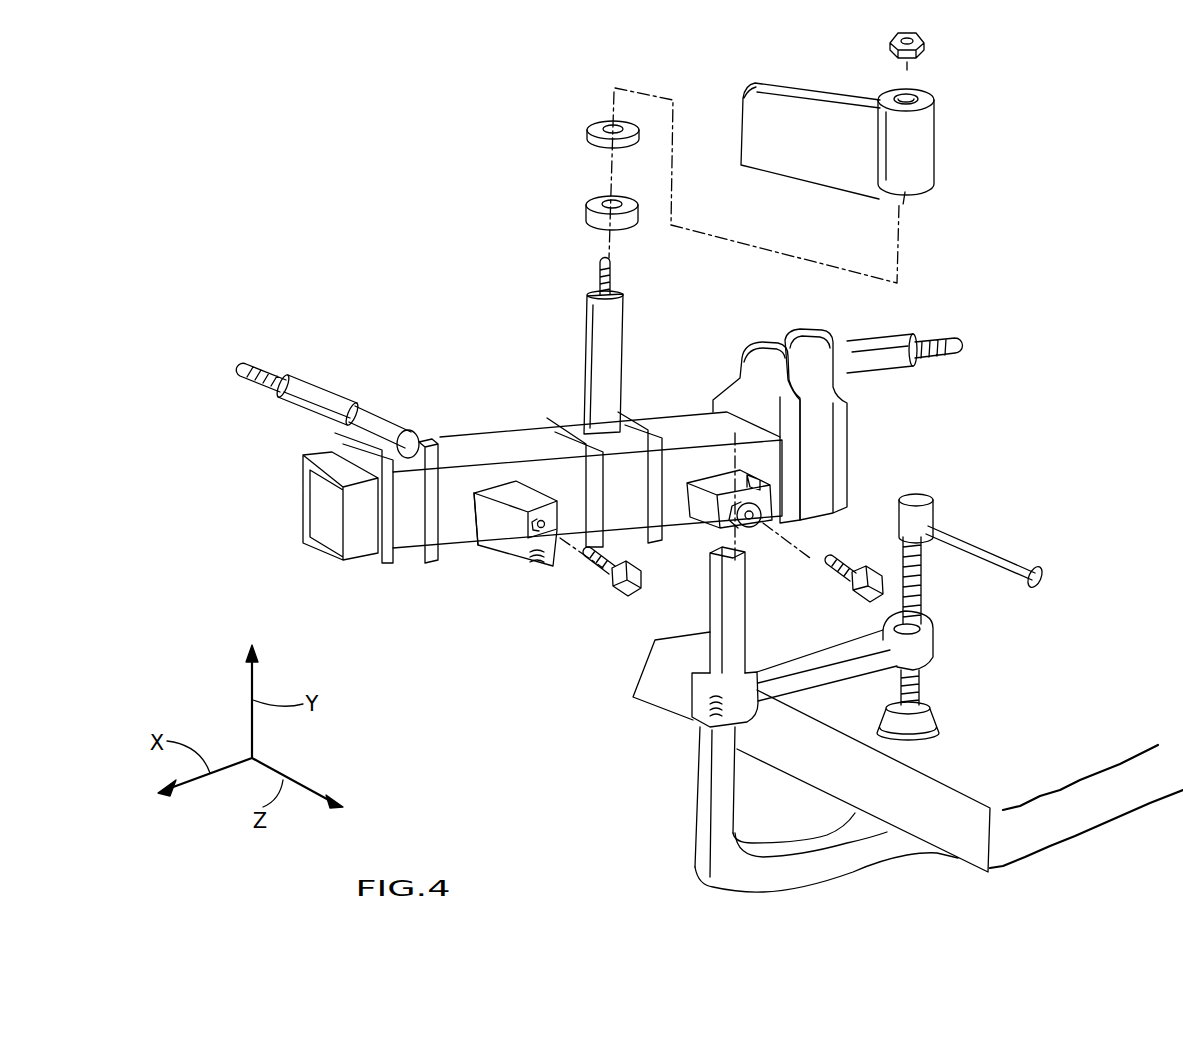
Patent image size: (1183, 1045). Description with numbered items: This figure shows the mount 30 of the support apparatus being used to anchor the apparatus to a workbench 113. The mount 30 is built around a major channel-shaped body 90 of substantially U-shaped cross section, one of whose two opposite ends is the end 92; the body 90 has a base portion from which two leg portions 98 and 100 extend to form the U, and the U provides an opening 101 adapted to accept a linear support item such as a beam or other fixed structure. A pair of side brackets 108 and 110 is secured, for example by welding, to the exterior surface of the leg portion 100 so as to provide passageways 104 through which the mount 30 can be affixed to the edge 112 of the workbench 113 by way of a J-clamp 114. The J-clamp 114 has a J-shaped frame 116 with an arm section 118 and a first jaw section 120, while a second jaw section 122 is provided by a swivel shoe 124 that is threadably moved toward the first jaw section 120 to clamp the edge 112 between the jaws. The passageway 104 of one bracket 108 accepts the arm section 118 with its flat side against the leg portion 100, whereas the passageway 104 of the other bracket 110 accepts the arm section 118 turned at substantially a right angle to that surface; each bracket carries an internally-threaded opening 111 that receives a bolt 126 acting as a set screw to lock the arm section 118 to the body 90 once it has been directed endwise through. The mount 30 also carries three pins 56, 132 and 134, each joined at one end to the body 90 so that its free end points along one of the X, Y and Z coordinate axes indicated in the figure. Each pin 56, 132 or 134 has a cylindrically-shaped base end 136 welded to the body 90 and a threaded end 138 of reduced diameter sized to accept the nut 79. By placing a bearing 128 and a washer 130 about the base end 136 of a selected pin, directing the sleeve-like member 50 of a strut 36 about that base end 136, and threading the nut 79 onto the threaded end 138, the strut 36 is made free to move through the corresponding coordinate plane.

The mount 30 is at (490, 445).
The strut 36 is at (782, 82).
The sleeve-like member 50 is at (932, 150).
The pin 56 is at (917, 373).
The nut 79 is at (922, 58).
The channel-shaped body 90 is at (850, 468).
The end 92 is at (506, 515).
The leg portion 98 is at (300, 500).
The leg portion 100 is at (450, 543).
The opening 101 is at (328, 528).
The passageway 104 is at (520, 508).
The side bracket 108 is at (583, 547).
The side bracket 110 is at (540, 568).
The internally-threaded opening 111 is at (532, 522).
The edge 112 is at (661, 717).
The workbench 113 is at (958, 850).
The J-clamp 114 is at (697, 844).
The J-shaped frame 116 is at (826, 878).
The arm section 118 is at (737, 634).
The first jaw section 120 is at (876, 867).
The second jaw section 122 is at (925, 690).
The swivel shoe 124 is at (940, 718).
The bolt 126 is at (617, 590).
The bearing 128 is at (585, 212).
The washer 130 is at (588, 132).
The pin 132 is at (588, 315).
The pin 134 is at (322, 390).
The base end 136 is at (628, 380).
The threaded end 138 is at (248, 382).